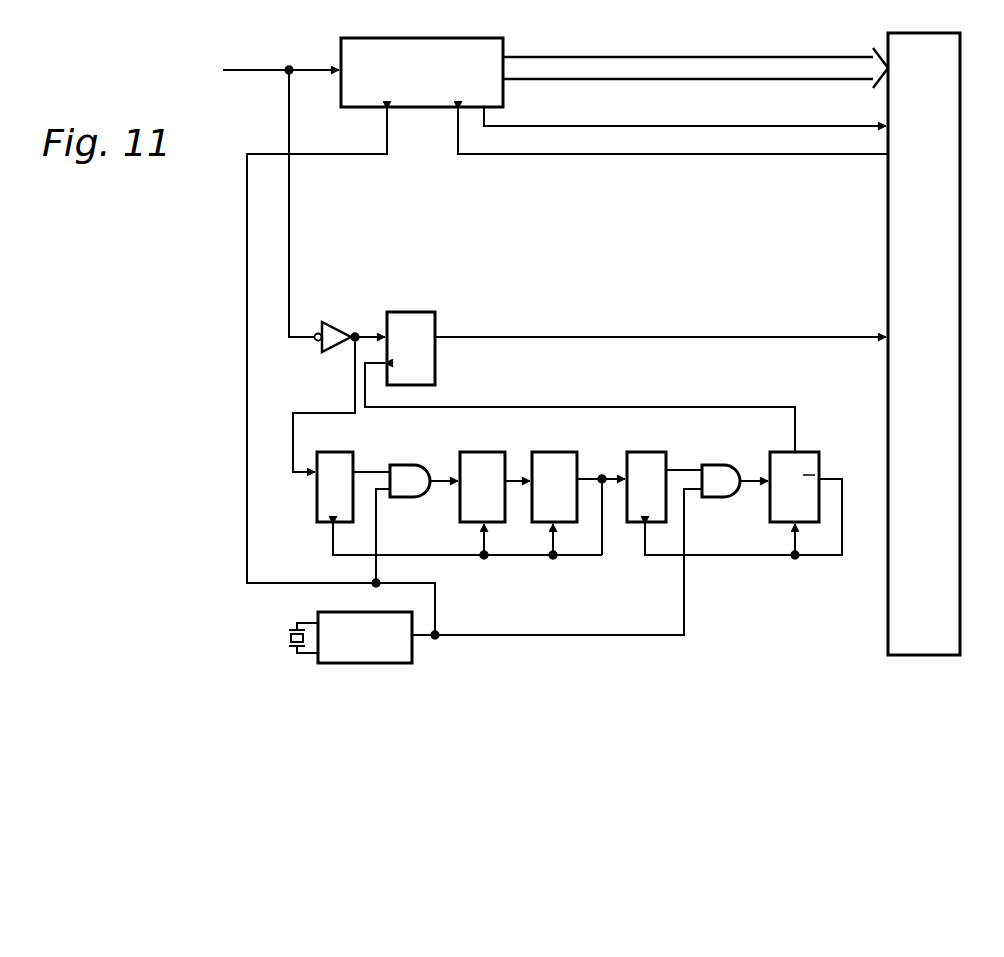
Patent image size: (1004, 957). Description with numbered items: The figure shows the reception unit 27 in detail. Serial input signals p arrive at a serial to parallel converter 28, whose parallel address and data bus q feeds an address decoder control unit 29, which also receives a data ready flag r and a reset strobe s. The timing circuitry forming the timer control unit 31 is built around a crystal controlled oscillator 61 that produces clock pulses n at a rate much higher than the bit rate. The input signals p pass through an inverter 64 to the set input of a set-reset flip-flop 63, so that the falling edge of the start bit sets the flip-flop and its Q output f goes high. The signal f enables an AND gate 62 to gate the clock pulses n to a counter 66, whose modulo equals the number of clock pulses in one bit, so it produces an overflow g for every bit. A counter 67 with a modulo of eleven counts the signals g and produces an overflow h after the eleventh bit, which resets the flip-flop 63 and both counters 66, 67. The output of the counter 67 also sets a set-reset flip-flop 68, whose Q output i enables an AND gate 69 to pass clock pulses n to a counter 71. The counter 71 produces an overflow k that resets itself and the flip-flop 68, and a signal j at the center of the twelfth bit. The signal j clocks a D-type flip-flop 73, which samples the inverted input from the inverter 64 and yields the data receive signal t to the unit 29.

The reception unit 27 is at (802, 40).
The serial to parallel converter 28 is at (495, 36).
The address decoder control unit 29 is at (960, 178).
The timer control unit 31 is at (228, 442).
The crystal controlled clock pulse generator or oscillator 61 is at (362, 665).
The AND gate 62 is at (418, 462).
The set-reset flip-flop 63 is at (315, 523).
The inverter 64 is at (337, 323).
The counter 66 is at (480, 451).
The counter 67 is at (558, 451).
The set-reset flip-flop 68 is at (653, 451).
The AND gate 69 is at (734, 463).
The counter 71 is at (815, 451).
The D-type flip-flop 73 is at (420, 313).